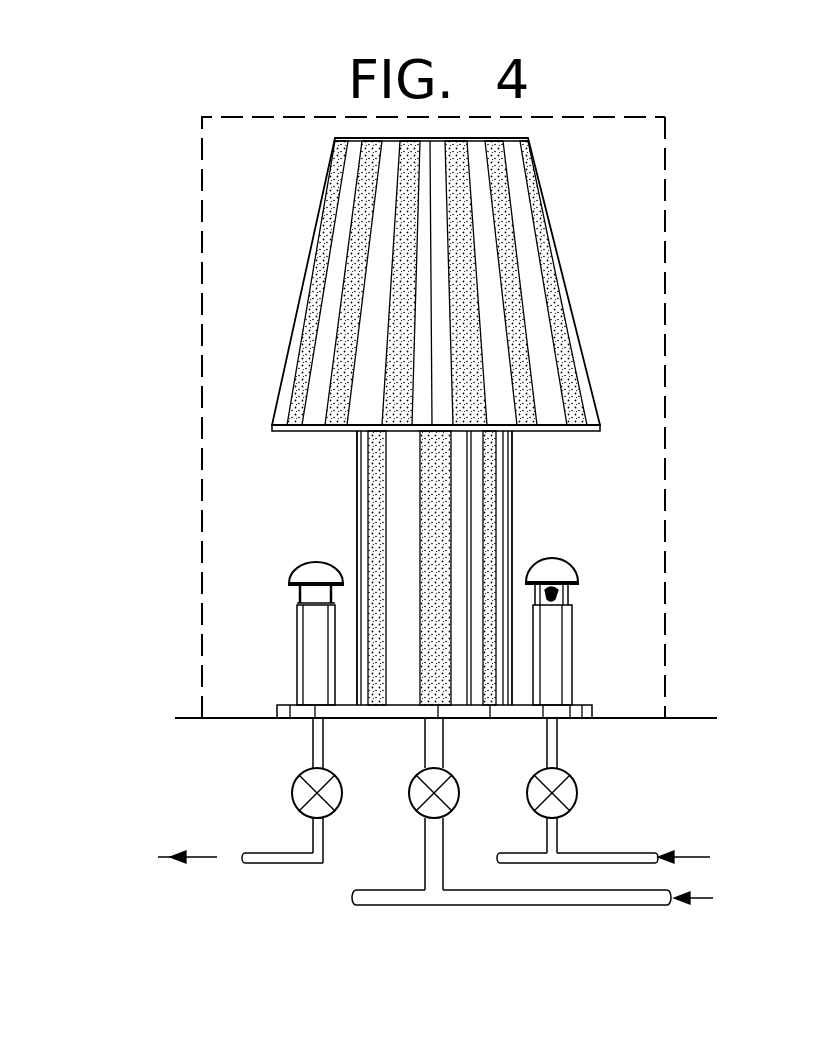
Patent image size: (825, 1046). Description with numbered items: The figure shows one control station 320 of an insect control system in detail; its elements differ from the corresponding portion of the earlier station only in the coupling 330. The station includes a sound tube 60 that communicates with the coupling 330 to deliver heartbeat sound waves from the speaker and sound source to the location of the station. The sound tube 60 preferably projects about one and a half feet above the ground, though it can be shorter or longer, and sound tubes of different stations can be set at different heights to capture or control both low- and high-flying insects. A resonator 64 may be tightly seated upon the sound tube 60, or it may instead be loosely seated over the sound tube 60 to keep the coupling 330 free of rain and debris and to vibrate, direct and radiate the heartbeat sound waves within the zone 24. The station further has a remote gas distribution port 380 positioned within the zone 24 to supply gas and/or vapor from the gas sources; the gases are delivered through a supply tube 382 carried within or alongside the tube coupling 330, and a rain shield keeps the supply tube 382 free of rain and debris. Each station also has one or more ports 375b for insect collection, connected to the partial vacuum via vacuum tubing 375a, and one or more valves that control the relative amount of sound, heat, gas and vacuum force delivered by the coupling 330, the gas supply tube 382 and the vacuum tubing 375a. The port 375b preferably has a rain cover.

The control station 320 is at (612, 268).
The zone 24 is at (662, 410).
The resonator 64 is at (347, 193).
The sound tube 60 is at (500, 460).
The remote gas distribution port 380 is at (563, 603).
The supply tube 382 is at (557, 667).
The port for insect collection 375b is at (310, 658).
The vacuum tubing 375a is at (263, 857).
The coupling 330 is at (398, 895).